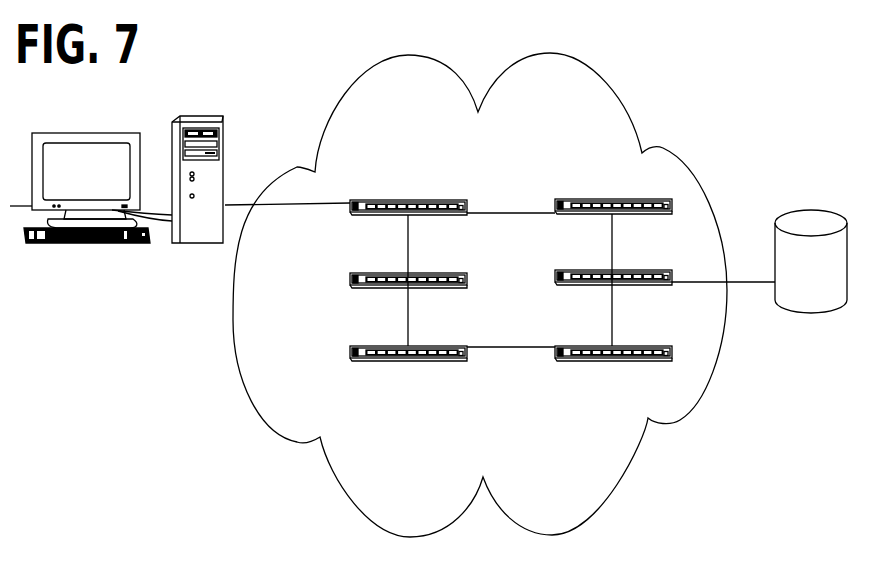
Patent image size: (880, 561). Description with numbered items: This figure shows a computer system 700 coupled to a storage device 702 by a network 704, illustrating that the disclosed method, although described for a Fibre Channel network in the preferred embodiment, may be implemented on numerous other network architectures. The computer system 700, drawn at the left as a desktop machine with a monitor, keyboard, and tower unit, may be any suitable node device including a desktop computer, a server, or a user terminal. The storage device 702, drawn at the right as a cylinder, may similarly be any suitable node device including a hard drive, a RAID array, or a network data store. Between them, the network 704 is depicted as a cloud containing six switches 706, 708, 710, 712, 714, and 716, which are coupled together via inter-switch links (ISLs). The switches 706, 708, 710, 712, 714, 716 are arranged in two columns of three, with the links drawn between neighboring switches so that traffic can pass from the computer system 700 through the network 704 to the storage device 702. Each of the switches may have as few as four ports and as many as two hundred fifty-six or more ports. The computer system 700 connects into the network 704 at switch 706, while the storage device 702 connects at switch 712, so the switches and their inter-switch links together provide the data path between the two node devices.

The computer system 700 is at (89, 243).
The storage device 702 is at (820, 312).
The network 704 is at (237, 365).
The switch 706 is at (348, 215).
The switch 708 is at (553, 213).
The switch 710 is at (350, 290).
The switch 712 is at (553, 286).
The switch 714 is at (350, 362).
The switch 716 is at (555, 358).